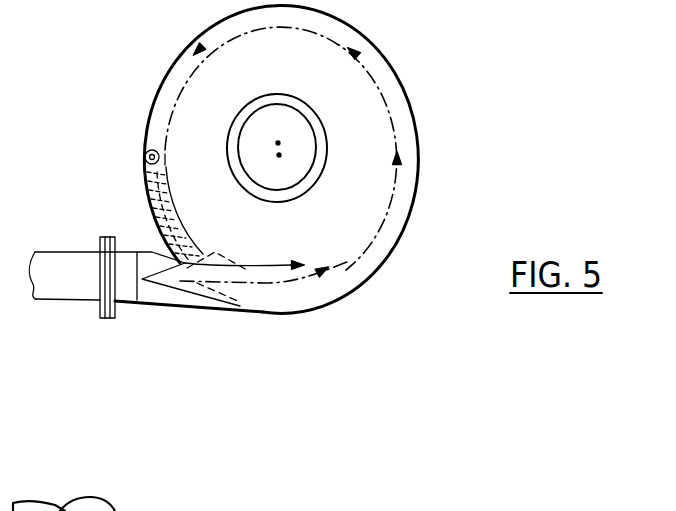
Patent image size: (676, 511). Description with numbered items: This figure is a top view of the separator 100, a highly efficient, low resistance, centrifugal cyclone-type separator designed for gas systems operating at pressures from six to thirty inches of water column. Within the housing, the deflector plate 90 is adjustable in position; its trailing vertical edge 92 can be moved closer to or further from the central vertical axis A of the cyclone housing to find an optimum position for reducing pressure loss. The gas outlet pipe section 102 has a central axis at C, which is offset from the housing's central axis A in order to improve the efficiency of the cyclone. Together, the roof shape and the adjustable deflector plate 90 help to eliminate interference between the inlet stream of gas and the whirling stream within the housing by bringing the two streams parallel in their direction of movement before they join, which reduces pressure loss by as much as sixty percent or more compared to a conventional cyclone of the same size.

The separator 100 is at (416, 91).
The gas outlet pipe section 102 is at (322, 138).
The central axis of the gas outlet pipe section C is at (276, 142).
The central vertical axis of the cyclone housing A is at (282, 156).
The deflector plate 90 is at (162, 223).
The trailing vertical edge 92 is at (225, 264).